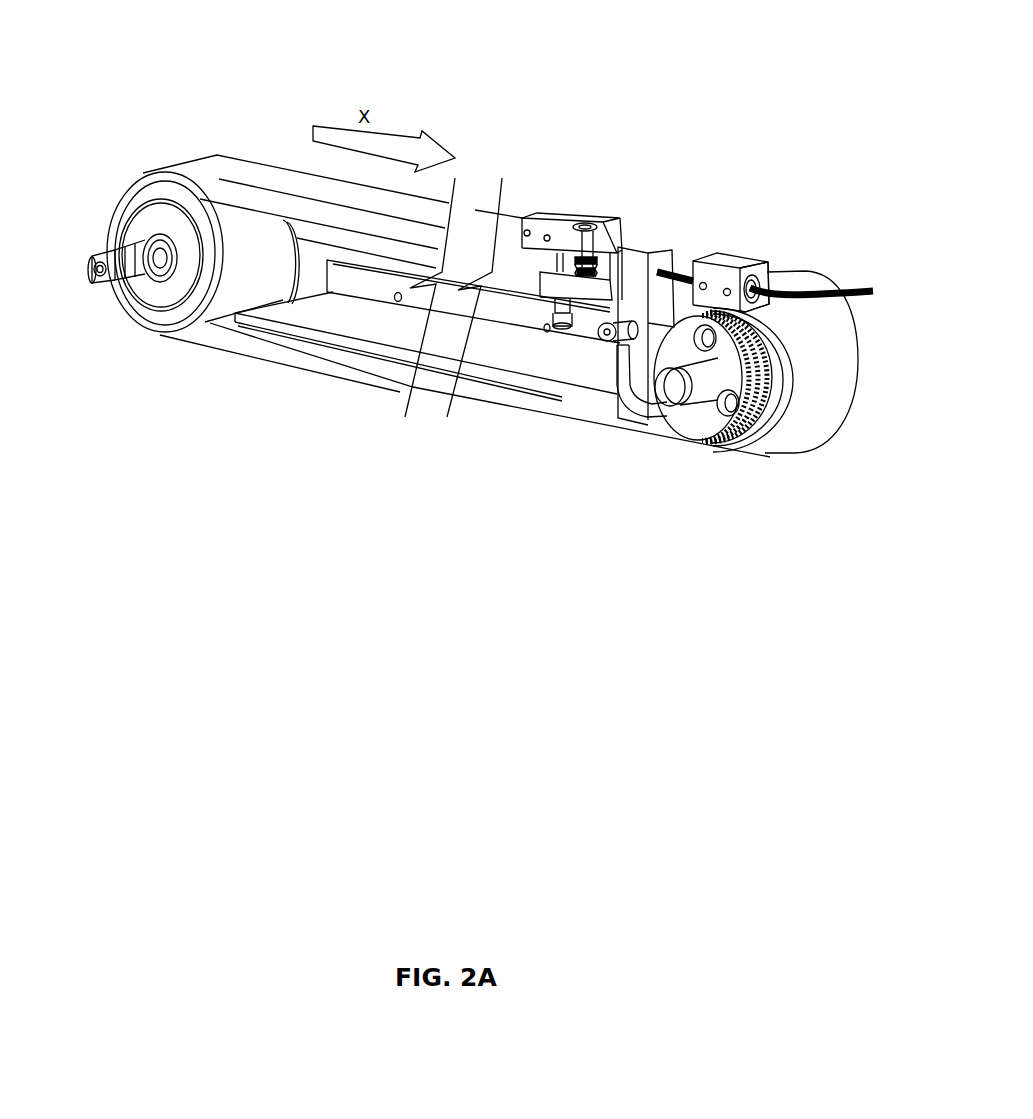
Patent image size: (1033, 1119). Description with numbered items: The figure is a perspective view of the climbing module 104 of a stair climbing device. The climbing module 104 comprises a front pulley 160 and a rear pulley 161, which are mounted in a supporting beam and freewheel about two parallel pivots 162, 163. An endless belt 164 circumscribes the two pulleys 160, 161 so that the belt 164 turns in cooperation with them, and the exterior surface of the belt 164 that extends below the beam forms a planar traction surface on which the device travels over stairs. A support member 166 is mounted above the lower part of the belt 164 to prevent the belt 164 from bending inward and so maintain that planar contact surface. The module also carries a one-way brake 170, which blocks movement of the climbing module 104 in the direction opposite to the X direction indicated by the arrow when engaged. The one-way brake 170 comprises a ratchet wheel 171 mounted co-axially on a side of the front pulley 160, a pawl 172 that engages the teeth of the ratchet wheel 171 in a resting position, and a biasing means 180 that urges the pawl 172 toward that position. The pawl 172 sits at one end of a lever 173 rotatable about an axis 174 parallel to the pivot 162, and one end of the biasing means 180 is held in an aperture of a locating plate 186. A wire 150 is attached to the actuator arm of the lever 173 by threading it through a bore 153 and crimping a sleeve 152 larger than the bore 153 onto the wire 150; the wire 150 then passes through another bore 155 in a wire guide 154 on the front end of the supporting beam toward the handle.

The climbing module 104 is at (458, 60).
The wire 150 is at (803, 287).
The sleeve 152 is at (620, 250).
The bore 153 is at (674, 250).
The wire guide 154 is at (735, 260).
The bore 155 is at (757, 265).
The front pulley 160 is at (765, 407).
The rear pulley 161 is at (118, 223).
The pivot 162 is at (668, 388).
The pivot 163 is at (155, 255).
The endless belt 164 is at (813, 407).
The support member 166 is at (507, 358).
The one-way brake 170 is at (607, 147).
The ratchet wheel 171 is at (717, 423).
The pawl 172 is at (645, 415).
The lever 173 is at (619, 362).
The axis 174 is at (606, 334).
The biasing means 180 is at (588, 228).
The locating plate 186 is at (555, 223).